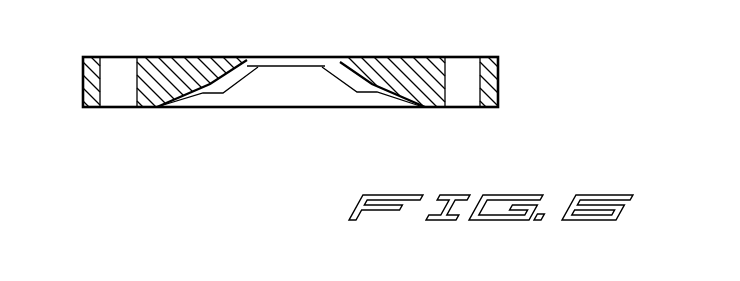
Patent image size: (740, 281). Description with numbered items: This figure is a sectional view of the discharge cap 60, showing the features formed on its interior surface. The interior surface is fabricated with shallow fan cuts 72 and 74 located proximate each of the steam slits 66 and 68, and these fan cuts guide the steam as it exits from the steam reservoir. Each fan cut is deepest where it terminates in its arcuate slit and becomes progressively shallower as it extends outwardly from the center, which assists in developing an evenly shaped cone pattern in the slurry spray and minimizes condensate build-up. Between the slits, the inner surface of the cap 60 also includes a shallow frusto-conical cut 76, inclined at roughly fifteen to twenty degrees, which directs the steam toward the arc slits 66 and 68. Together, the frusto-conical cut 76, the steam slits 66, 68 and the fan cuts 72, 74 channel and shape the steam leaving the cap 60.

The discharge cap 60 is at (500, 72).
The steam slit 66 is at (258, 68).
The steam slit 68 is at (322, 67).
The fan cut 72 is at (212, 92).
The fan cut 74 is at (367, 93).
The frusto-conical cut 76 is at (298, 92).